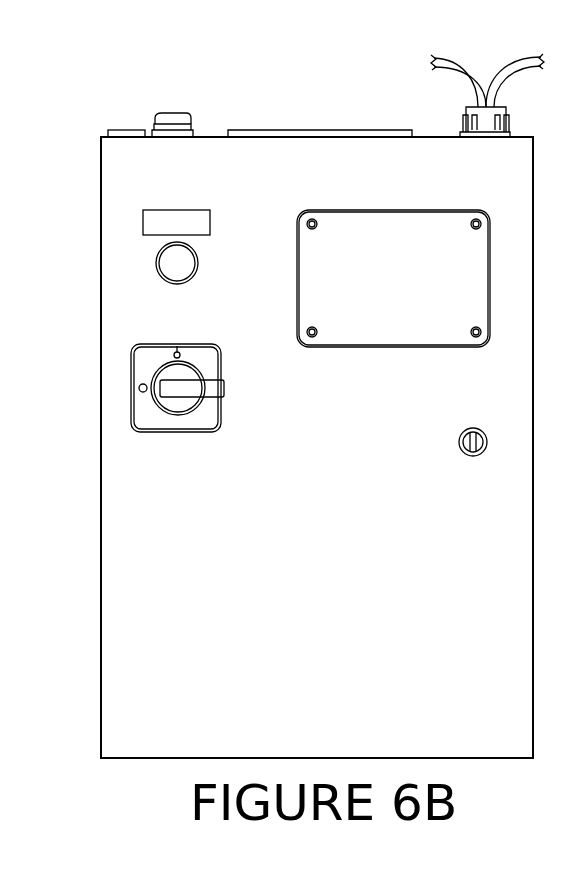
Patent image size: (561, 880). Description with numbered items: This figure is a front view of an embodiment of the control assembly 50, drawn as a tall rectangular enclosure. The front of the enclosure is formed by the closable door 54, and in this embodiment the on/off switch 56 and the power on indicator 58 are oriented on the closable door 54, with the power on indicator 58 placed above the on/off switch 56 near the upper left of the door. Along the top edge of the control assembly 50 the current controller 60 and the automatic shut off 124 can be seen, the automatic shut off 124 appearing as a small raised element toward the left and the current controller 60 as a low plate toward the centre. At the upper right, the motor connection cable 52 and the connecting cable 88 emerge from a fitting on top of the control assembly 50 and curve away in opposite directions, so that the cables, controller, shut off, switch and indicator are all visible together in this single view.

The control assembly 50 is at (66, 773).
The motor connection cable 52 is at (472, 73).
The closable door 54 is at (160, 572).
The on/off switch 56 is at (160, 389).
The power on indicator 58 is at (177, 262).
The current controller 60 is at (320, 129).
The connecting cable 88 is at (498, 73).
The automatic shut off 124 is at (170, 112).